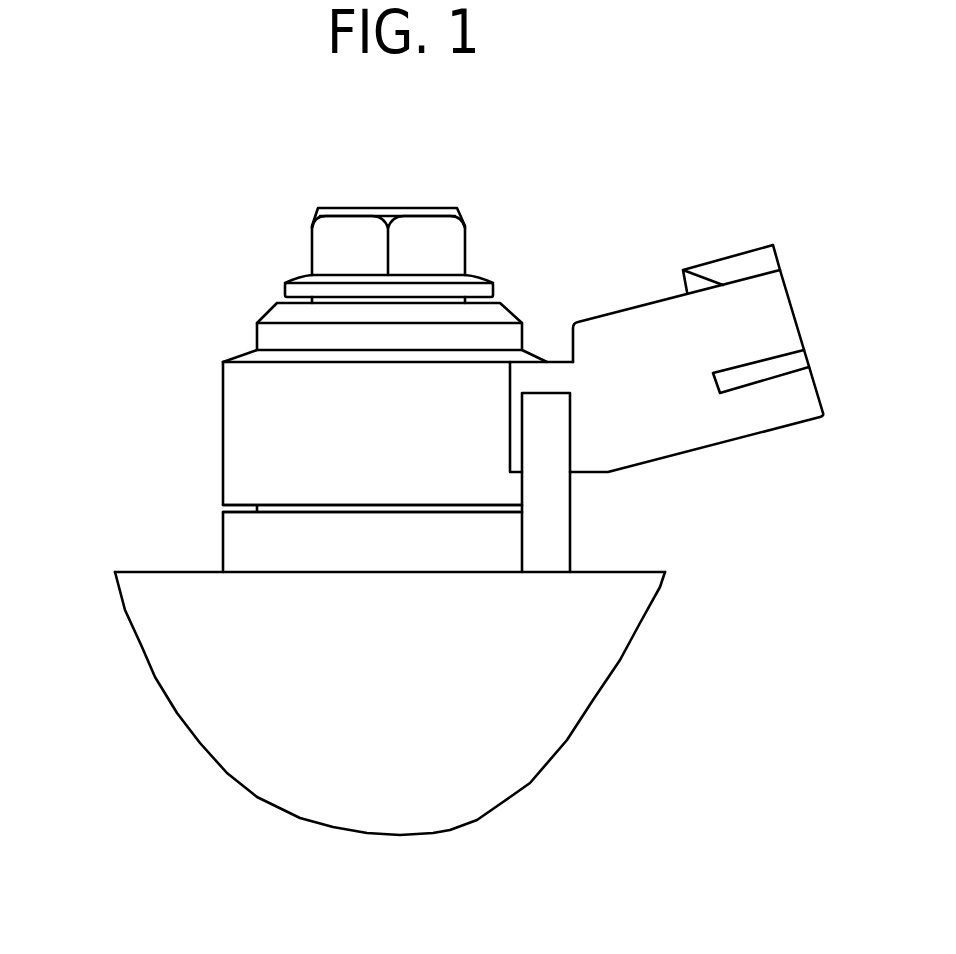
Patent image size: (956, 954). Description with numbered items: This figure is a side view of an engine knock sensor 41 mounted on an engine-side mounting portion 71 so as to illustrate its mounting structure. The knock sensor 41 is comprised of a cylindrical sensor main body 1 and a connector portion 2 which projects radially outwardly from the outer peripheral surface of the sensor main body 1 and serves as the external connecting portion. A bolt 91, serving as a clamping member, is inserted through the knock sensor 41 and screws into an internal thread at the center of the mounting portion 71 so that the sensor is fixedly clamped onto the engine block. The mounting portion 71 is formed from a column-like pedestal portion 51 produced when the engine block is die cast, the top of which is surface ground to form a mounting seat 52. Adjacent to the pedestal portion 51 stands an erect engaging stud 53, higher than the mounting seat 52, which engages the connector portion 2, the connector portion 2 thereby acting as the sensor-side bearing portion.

The cylindrical sensor main body 1 is at (223, 410).
The connector portion 2 is at (623, 309).
The knock sensor 41 is at (600, 200).
The column-like pedestal portion 51 is at (222, 552).
The mounting seat 52 is at (275, 507).
The engaging stud 53 is at (570, 510).
The mounting portion 71 is at (155, 570).
The bolt 91 is at (398, 208).